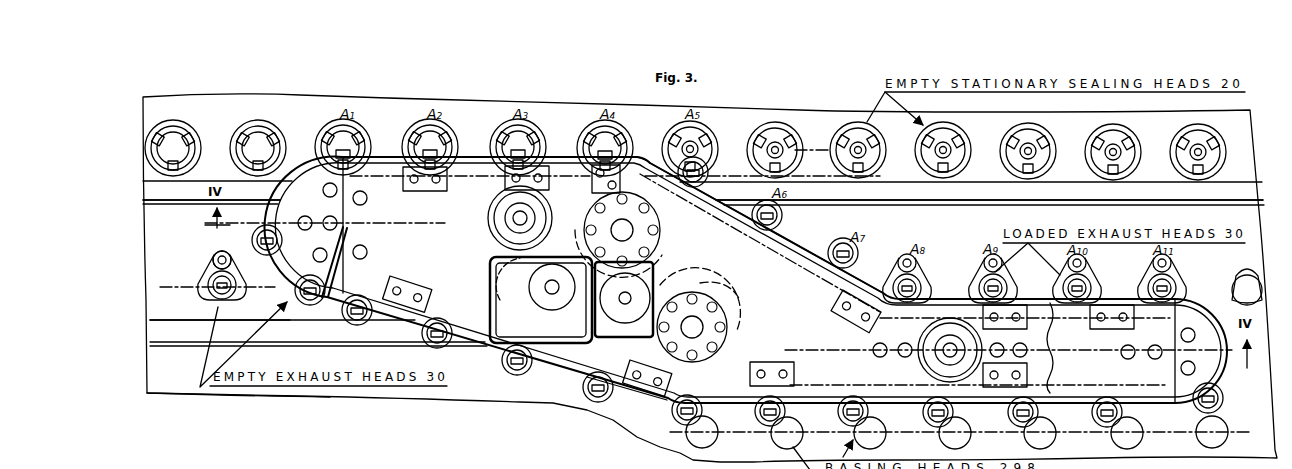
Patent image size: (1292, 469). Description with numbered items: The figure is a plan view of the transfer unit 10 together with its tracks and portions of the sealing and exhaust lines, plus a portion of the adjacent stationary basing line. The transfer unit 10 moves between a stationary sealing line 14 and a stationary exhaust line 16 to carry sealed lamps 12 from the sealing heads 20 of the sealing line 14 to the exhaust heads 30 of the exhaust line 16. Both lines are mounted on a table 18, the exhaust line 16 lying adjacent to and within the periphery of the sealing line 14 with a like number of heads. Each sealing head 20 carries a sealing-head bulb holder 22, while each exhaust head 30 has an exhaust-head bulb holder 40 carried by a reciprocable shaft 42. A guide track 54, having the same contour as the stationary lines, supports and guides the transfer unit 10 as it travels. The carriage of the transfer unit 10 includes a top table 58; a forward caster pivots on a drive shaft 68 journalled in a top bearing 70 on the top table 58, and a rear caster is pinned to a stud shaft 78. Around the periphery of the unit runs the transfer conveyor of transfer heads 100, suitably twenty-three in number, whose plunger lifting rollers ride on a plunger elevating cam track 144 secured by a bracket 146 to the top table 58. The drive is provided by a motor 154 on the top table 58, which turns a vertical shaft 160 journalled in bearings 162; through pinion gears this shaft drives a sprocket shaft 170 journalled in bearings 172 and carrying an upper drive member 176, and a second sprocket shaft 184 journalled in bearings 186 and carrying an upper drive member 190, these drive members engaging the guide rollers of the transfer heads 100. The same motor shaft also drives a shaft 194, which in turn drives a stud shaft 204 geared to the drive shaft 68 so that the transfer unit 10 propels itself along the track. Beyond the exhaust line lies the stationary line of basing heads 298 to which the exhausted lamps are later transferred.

The transfer unit 10 is at (470, 154).
The sealed lamp 12 is at (190, 134).
The stationary sealing line 14 is at (812, 150).
The stationary exhaust line 16 is at (184, 290).
The table 18 is at (172, 388).
The sealing head 20 is at (322, 132).
The sealing-head bulb holder 22 is at (1174, 130).
The exhaust head 30 is at (737, 326).
The exhaust-head bulb holder 40 is at (208, 265).
The shaft 42 is at (218, 253).
The guide track 54 is at (1235, 190).
The top table 58 is at (710, 222).
The drive shaft 68 is at (508, 210).
The top bearing 70 is at (504, 218).
The stud shaft 78 is at (943, 348).
The transfer head 100 is at (350, 140).
The plunger elevating cam track 144 is at (393, 163).
The bracket 146 is at (428, 192).
The motor 154 is at (556, 333).
The vertical shaft 160 is at (664, 283).
The bearings 162 is at (658, 260).
The sprocket shaft 170 is at (700, 325).
The bearings 172 is at (738, 328).
The upper drive member 176 is at (735, 290).
The second sprocket shaft 184 is at (662, 230).
The bearings 186 is at (641, 156).
The upper drive member 190 is at (678, 244).
The shaft 194 is at (478, 286).
The stud shaft 204 is at (490, 270).
The basing head 298 is at (957, 432).